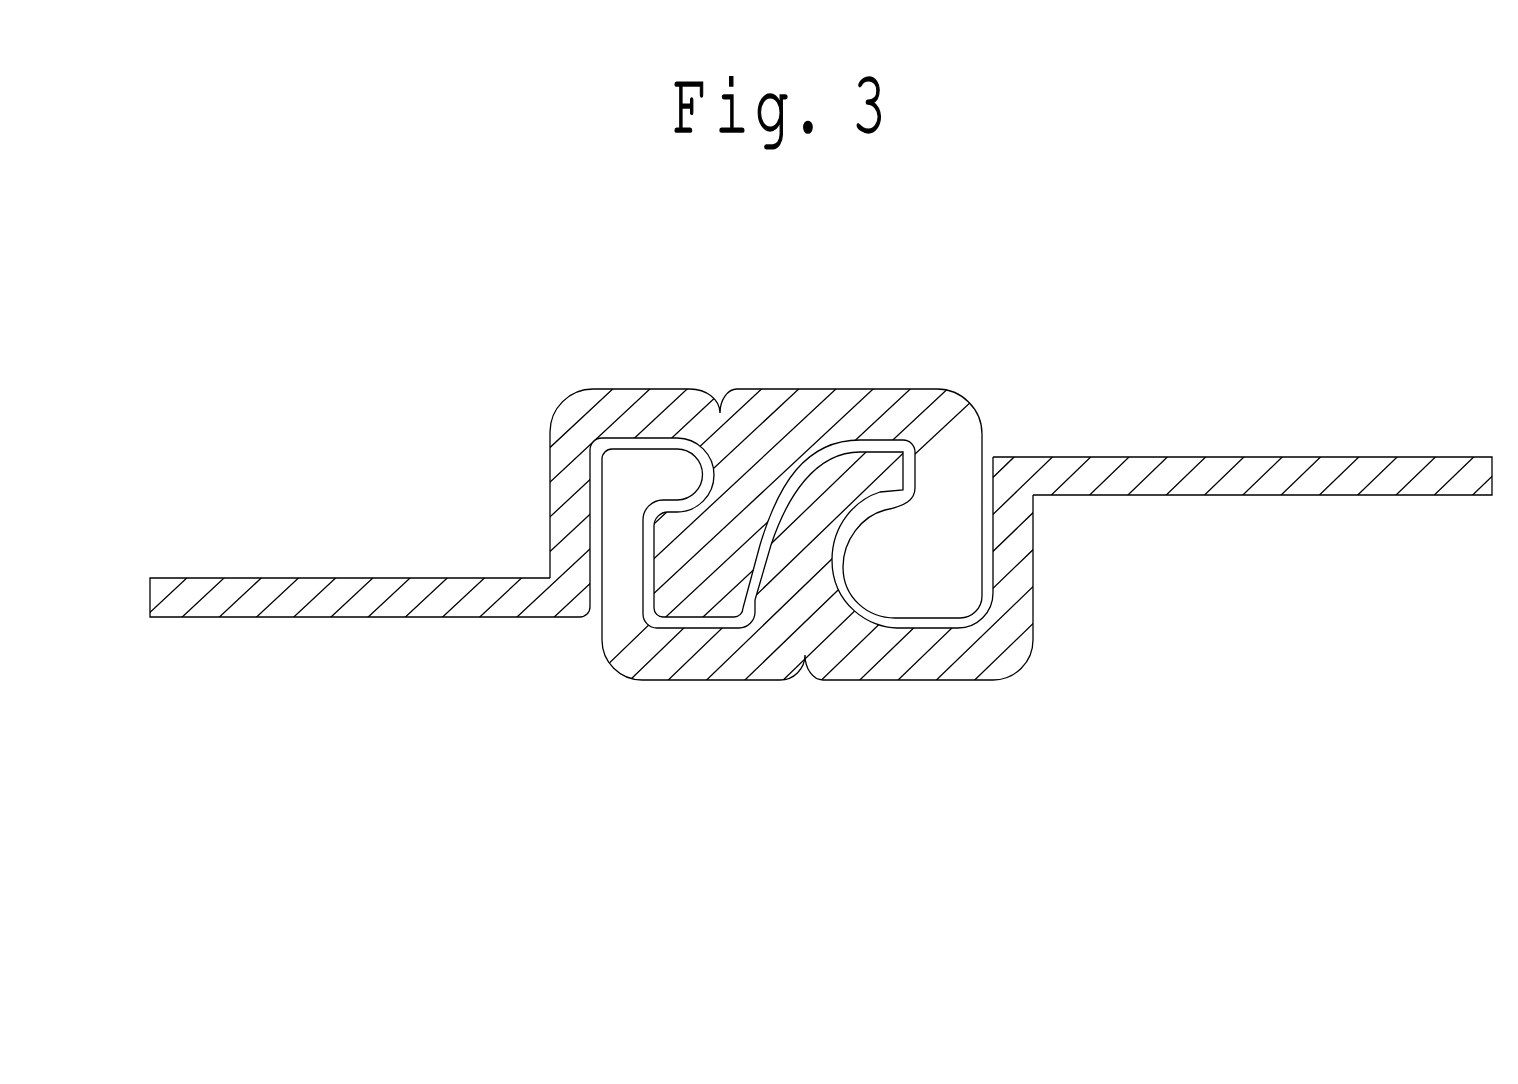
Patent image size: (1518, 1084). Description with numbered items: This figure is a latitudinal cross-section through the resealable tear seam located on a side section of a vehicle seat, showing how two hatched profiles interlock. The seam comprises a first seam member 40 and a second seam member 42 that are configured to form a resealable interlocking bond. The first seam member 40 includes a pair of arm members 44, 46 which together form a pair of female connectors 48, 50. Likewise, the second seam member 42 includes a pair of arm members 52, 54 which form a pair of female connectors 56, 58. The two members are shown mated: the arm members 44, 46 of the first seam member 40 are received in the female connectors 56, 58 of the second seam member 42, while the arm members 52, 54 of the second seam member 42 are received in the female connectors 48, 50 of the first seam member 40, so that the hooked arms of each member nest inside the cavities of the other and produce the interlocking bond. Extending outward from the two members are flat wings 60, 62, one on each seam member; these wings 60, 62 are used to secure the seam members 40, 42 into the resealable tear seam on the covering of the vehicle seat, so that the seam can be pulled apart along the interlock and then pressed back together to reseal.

The first seam member 40 is at (895, 681).
The second seam member 42 is at (632, 386).
The arm member 44 is at (663, 470).
The arm member 46 is at (835, 488).
The female connector 48 is at (693, 628).
The female connector 50 is at (957, 626).
The arm member 52 is at (935, 540).
The arm member 54 is at (722, 550).
The female connector 56 is at (870, 444).
The female connector 58 is at (687, 450).
The wing 60 is at (1335, 465).
The wing 62 is at (347, 573).